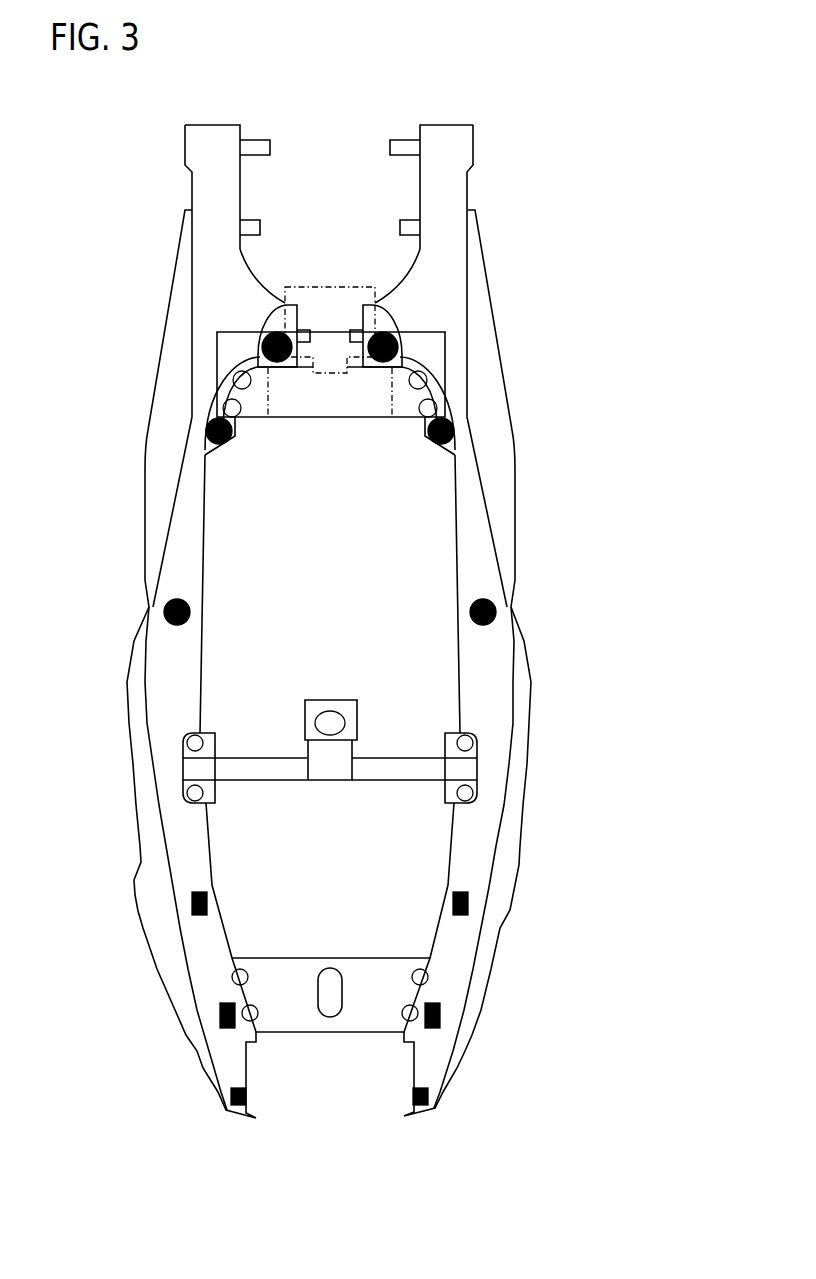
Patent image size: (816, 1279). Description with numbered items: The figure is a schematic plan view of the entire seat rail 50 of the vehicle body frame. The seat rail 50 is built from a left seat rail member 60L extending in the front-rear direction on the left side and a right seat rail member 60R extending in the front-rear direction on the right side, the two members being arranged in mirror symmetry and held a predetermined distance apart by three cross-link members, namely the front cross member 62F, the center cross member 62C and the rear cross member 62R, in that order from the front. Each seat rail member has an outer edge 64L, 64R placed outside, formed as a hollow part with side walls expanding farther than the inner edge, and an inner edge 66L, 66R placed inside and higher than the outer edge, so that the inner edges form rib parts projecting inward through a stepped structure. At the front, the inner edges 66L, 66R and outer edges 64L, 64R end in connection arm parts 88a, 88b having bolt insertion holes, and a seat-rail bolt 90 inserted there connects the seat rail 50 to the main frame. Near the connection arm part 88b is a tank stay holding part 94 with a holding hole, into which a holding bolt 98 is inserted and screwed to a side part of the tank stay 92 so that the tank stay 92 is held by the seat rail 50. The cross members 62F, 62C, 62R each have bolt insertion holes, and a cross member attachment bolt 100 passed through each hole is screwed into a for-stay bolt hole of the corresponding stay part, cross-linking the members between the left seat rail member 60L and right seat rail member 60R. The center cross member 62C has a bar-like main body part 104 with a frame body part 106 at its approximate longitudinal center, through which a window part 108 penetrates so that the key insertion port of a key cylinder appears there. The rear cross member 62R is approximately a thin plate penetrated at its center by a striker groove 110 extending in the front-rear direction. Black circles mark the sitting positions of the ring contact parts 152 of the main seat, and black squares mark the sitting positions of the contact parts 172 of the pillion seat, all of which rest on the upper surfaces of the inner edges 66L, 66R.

The seat rail 50 is at (64, 131).
The connection arm part 88b is at (214, 135).
The connection arm part 88a is at (182, 289).
The seat-rail bolt 90 is at (254, 152).
The tank stay 92 is at (316, 286).
The tank stay holding part 94 is at (258, 325).
The holding bolt 98 is at (358, 336).
The left seat rail member 60L is at (156, 370).
The right seat rail member 60R is at (504, 370).
The front cross member 62F is at (333, 405).
The center cross member 62C is at (330, 763).
The rear cross member 62R is at (331, 997).
The outer edge 64L is at (164, 932).
The outer edge 64R is at (497, 932).
The inner edge 66L is at (177, 645).
The inner edge 66R is at (447, 645).
The cross member attachment bolt 100 is at (246, 382).
The main body part 104 is at (381, 762).
The frame body part 106 is at (330, 788).
The window part 108 is at (330, 716).
The striker groove 110 is at (334, 976).
The ring contact part 152 is at (394, 758).
The contact part 172 is at (366, 1051).